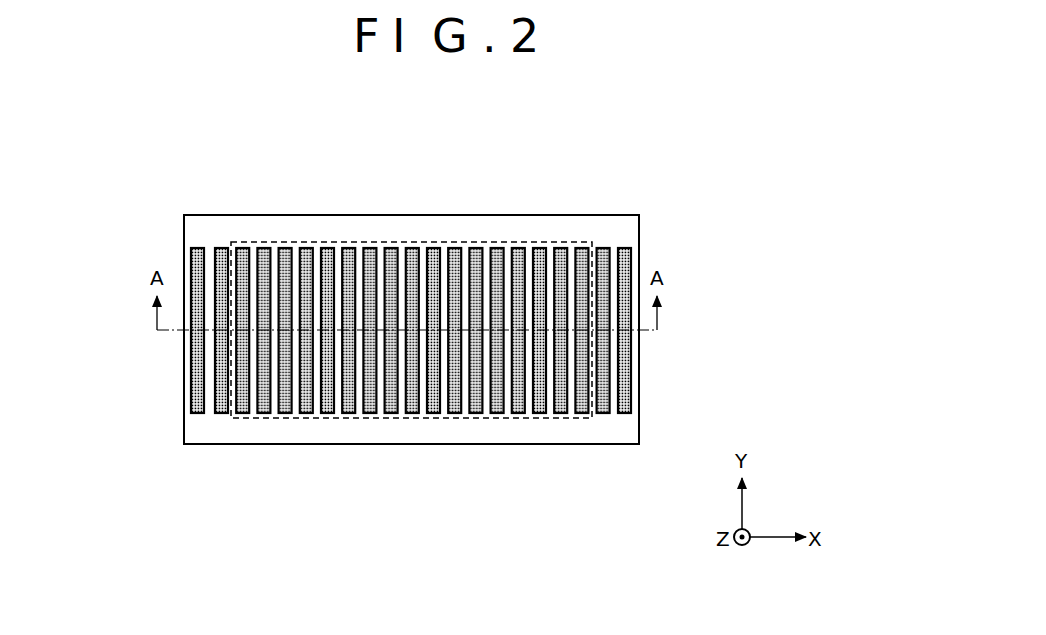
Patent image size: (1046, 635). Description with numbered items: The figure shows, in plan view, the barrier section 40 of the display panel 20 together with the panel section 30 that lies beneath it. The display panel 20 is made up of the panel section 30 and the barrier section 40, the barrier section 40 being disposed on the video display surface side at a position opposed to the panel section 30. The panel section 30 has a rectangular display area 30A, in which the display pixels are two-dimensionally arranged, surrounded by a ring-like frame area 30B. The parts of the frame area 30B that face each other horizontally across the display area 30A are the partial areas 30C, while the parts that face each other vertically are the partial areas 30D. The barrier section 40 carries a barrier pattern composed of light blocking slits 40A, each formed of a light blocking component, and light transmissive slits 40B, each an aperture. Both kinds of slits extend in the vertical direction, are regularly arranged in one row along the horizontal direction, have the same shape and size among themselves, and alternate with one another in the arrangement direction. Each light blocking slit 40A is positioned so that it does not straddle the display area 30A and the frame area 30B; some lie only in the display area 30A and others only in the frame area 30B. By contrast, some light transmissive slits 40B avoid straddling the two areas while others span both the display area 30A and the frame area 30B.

The display panel 20 is at (686, 198).
The panel section 30 is at (643, 245).
The display area 30A is at (545, 240).
The frame area 30B is at (454, 226).
The partial area 30C is at (190, 361).
The partial area 30D is at (320, 226).
The barrier section 40 is at (577, 493).
The light blocking slit 40A is at (456, 414).
The light transmissive slit 40B is at (529, 373).